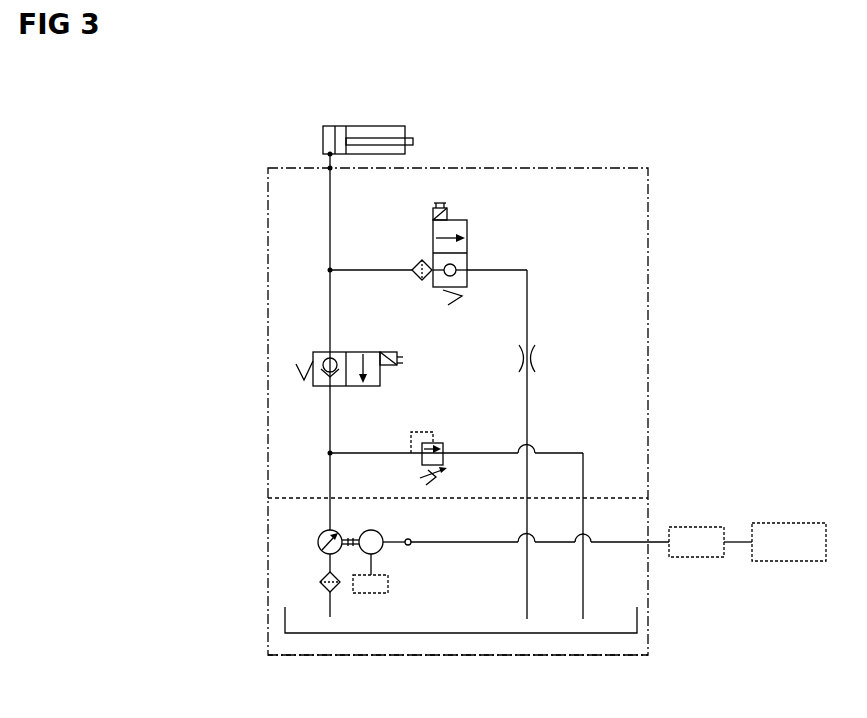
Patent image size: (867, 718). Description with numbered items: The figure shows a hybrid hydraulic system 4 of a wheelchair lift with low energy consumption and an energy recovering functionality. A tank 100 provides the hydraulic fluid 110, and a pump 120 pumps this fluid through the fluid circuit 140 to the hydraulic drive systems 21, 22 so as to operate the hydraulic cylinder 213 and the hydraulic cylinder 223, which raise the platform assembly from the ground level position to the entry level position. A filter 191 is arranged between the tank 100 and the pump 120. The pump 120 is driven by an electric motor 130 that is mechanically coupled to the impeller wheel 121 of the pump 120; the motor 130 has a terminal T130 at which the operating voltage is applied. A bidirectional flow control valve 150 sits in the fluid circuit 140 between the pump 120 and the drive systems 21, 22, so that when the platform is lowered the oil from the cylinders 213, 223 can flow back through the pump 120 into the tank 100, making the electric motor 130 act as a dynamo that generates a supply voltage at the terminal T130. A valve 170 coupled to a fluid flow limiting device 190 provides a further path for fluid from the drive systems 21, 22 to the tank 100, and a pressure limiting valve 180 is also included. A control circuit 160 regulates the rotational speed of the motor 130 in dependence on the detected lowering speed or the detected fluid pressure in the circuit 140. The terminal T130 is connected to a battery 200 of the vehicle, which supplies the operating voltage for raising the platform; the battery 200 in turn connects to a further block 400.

The hydraulic system 4 is at (234, 87).
The hydraulic drive system 21 is at (414, 119).
The hydraulic drive system 22 is at (414, 119).
The hydraulic cylinder 213 is at (425, 117).
The hydraulic cylinder 223 is at (374, 126).
The tank 100 is at (465, 641).
The hydraulic fluid 110 is at (385, 624).
The pump 120 is at (312, 530).
The impeller wheel 121 is at (326, 533).
The electric motor 130 is at (388, 530).
The terminal T130 is at (415, 552).
The fluid circuit 140 is at (329, 254).
The bidirectional flow control valve 150 is at (376, 348).
The control circuit 160 is at (391, 583).
The valve 170 is at (470, 222).
The pressure limiting valve 180 is at (450, 437).
The fluid flow limiting device 190 is at (540, 351).
The filter 191 is at (318, 581).
The battery 200 is at (698, 524).
The vehicle control unit 400 is at (788, 521).